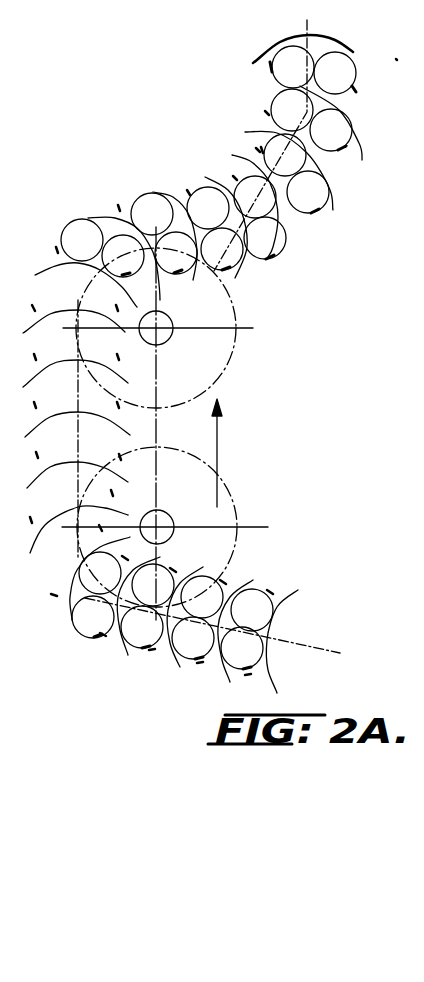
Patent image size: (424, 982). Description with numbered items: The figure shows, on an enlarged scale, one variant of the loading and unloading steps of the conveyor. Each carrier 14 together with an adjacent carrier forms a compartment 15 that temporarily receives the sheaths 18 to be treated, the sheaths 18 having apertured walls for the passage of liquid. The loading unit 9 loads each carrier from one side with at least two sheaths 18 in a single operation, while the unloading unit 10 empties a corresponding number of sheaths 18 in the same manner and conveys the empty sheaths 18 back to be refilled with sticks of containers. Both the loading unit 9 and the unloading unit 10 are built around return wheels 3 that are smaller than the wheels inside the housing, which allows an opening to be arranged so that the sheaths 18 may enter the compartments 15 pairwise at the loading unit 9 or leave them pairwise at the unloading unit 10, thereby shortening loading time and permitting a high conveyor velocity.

The loading unit 9 is at (55, 217).
The return wheels 3 is at (230, 342).
The carrier 14 is at (287, 227).
The sheaths 18 is at (270, 247).
The unloading unit 10 is at (54, 608).
The compartment 15 is at (243, 143).